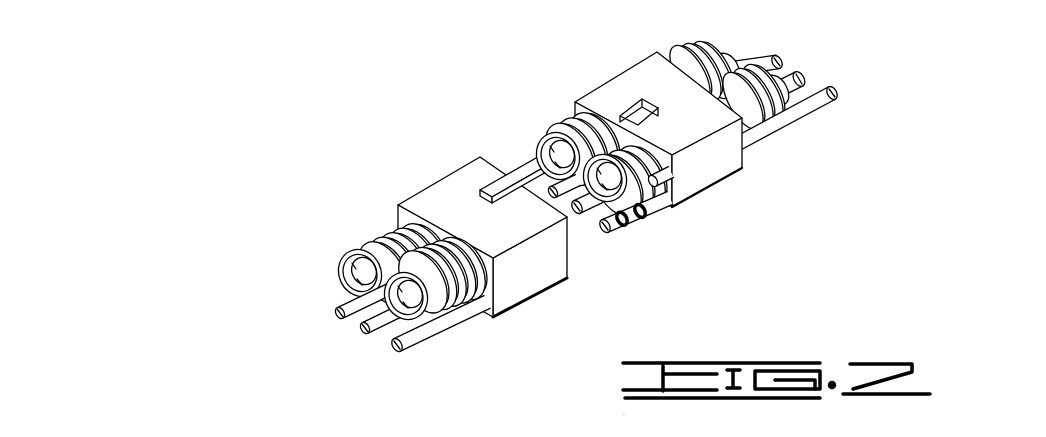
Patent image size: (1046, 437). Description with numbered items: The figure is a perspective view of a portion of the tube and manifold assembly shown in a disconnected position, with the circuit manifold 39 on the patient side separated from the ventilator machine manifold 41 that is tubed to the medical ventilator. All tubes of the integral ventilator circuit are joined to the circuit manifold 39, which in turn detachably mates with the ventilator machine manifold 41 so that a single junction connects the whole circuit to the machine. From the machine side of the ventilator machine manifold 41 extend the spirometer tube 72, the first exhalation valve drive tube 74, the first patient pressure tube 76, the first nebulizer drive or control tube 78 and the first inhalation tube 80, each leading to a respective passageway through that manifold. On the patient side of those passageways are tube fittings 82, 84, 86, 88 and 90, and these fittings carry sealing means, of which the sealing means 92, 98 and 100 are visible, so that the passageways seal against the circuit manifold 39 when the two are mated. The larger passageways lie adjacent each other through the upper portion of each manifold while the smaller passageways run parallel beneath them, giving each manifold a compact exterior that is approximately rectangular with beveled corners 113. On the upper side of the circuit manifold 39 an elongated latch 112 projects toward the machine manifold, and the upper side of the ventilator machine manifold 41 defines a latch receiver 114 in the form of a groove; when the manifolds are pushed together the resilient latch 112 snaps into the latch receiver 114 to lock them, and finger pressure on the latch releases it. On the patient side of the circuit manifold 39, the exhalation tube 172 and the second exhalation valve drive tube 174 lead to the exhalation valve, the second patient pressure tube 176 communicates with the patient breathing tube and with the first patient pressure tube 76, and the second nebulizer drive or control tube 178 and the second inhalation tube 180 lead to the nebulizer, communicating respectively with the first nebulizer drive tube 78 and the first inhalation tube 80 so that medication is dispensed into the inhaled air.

The circuit manifold 39 is at (533, 293).
The ventilator machine manifold 41 is at (718, 178).
The spirometer tube 72 is at (705, 50).
The first exhalation valve drive tube 74 is at (765, 60).
The first patient pressure tube 76 is at (793, 75).
The first nebulizer drive or control tube 78 is at (825, 90).
The first inhalation tube 80 is at (767, 107).
The tube fitting 82 is at (548, 128).
The tube fitting 84 is at (551, 201).
The tube fitting 86 is at (585, 209).
The tube fitting 88 is at (612, 230).
The tube fitting 90 is at (656, 189).
The sealing means 92 is at (563, 116).
The sealing means 98 is at (646, 214).
The sealing means 100 is at (652, 187).
The elongated latch 112 is at (507, 172).
The beveled corners 113 is at (708, 128).
The latch receiver 114 is at (652, 100).
The exhalation tube 172 is at (379, 247).
The second exhalation valve drive tube 174 is at (338, 316).
The second patient pressure tube 176 is at (368, 333).
The second nebulizer drive or control tube 178 is at (407, 349).
The second inhalation tube 180 is at (450, 311).